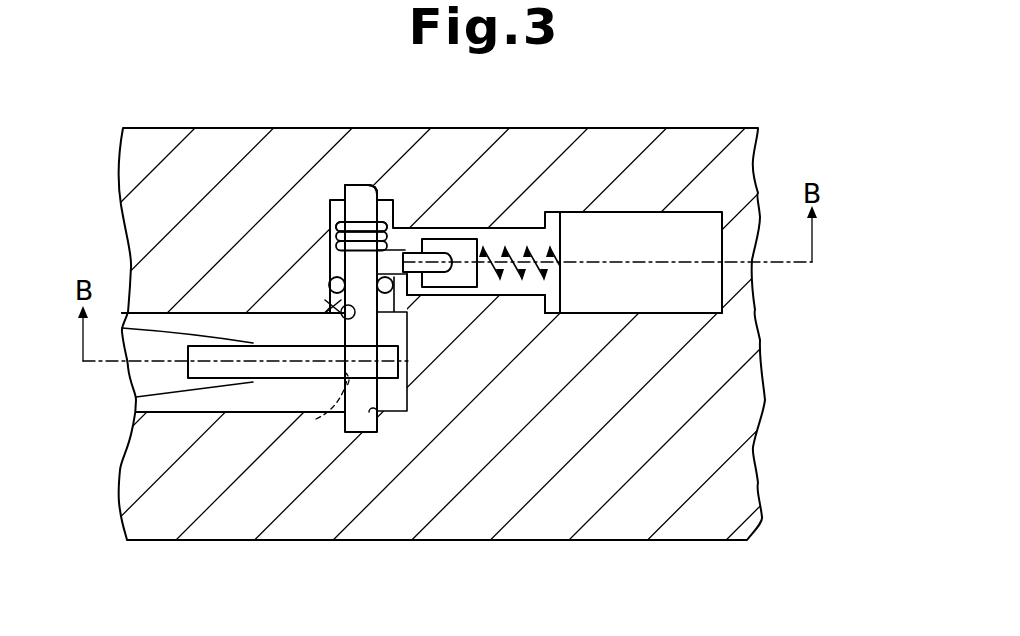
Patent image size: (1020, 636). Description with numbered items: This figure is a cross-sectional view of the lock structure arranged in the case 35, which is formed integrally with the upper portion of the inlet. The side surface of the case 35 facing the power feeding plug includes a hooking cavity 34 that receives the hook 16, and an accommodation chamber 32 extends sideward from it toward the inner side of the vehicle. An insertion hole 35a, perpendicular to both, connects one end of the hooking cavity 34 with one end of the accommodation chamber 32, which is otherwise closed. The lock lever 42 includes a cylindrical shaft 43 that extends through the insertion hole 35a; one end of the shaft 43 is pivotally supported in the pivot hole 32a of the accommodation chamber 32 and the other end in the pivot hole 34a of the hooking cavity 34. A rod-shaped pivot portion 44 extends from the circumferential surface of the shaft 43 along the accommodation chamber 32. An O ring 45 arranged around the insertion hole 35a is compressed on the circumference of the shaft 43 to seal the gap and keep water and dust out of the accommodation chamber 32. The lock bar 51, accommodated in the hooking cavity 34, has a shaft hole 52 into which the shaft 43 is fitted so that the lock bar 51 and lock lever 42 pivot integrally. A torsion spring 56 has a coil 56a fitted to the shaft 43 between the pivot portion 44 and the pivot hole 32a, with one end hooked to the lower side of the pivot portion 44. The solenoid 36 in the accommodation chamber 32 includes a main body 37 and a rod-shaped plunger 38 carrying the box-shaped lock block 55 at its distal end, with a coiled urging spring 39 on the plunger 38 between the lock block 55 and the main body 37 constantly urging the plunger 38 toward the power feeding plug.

The hook 16 is at (162, 398).
The accommodation chamber 32 is at (553, 212).
The pivot hole 32a is at (380, 190).
The hooking cavity 34 is at (252, 318).
The pivot hole 34a is at (373, 414).
The case 35 is at (458, 138).
The insertion hole 35a is at (328, 306).
The solenoid 36 is at (642, 210).
The main body 37 is at (656, 298).
The plunger 38 is at (508, 280).
The urging spring 39 is at (537, 295).
The lock lever 42 is at (356, 187).
The shaft 43 is at (372, 395).
The pivot portion 44 is at (436, 272).
The O ring 45 is at (330, 275).
The lock bar 51 is at (268, 380).
The shaft hole 52 is at (323, 410).
The lock block 55 is at (462, 283).
The torsion spring 56 is at (405, 250).
The coil 56a is at (332, 218).